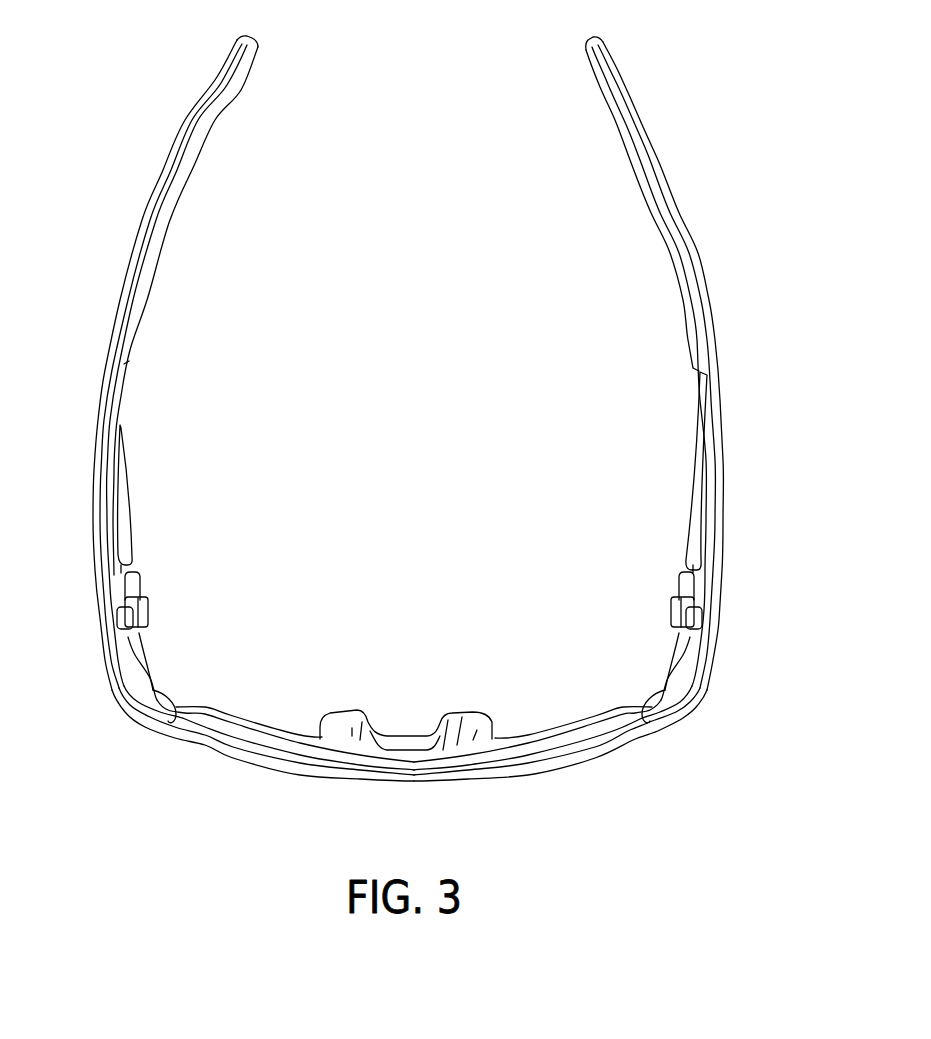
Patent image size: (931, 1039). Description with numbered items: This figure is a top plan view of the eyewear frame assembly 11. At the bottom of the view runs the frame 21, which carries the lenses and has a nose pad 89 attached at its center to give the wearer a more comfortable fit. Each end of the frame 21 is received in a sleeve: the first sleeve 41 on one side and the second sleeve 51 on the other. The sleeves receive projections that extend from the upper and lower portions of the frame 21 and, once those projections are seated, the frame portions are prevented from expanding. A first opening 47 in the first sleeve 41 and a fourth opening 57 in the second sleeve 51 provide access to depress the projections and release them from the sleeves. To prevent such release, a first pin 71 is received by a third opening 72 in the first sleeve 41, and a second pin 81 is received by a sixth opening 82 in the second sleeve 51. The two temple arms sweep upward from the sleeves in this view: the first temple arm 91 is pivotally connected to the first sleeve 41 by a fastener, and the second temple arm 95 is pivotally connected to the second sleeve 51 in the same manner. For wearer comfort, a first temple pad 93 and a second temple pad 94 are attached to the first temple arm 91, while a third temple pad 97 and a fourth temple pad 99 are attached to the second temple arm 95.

The eyewear frame assembly 11 is at (90, 809).
The frame 21 is at (222, 769).
The second sleeve 51 is at (104, 703).
The first sleeve 41 is at (714, 702).
The second temple arm 95 is at (190, 227).
The first temple arm 91 is at (606, 139).
The fourth temple pad 99 is at (141, 331).
The second temple pad 94 is at (668, 252).
The third temple pad 97 is at (130, 517).
The first temple pad 93 is at (688, 519).
The first pin 71 is at (146, 598).
The second pin 81 is at (670, 607).
The fourth opening 57 is at (120, 625).
The first opening 47 is at (700, 627).
The third opening 72 is at (134, 647).
The sixth opening 82 is at (673, 638).
The nose pad 89 is at (356, 710).